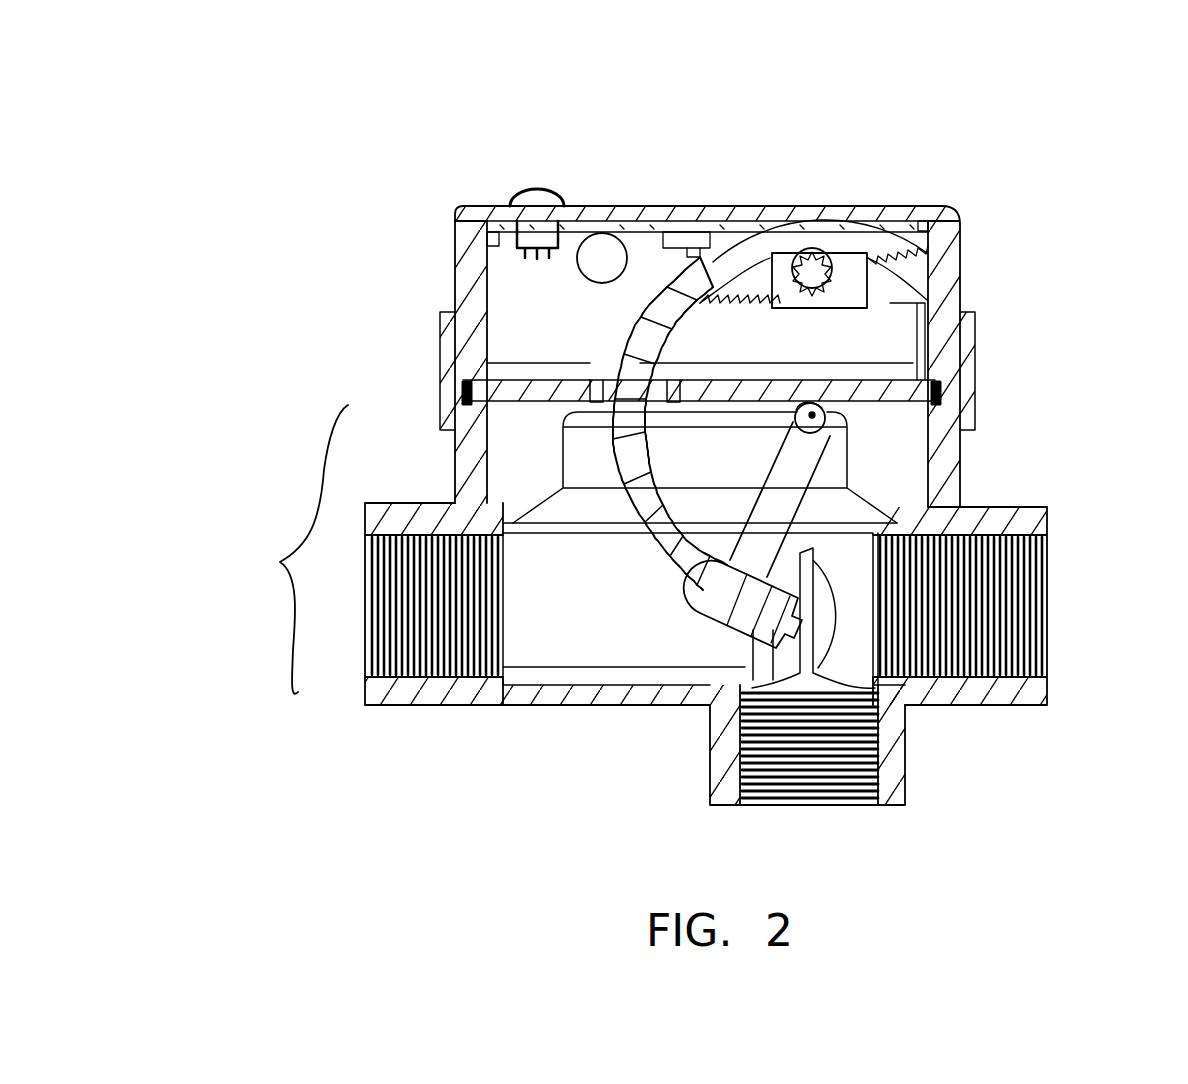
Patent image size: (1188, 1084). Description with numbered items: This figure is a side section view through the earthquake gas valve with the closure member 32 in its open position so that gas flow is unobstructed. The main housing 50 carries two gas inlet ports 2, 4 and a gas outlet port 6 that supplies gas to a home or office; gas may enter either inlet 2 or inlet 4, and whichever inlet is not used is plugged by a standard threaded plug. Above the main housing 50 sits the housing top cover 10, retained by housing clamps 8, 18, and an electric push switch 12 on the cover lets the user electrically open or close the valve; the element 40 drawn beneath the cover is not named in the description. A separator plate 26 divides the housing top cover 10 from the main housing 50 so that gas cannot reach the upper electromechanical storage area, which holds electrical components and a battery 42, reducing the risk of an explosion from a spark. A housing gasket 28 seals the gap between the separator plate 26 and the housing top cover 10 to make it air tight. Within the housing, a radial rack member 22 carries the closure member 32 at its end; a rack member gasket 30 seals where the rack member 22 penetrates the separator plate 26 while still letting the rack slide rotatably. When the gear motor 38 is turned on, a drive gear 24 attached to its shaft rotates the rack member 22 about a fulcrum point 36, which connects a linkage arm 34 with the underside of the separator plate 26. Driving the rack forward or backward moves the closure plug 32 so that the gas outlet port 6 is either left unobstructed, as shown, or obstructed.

The gas inlet port 2 is at (365, 640).
The gas inlet port 4 is at (855, 803).
The gas outlet port 6 is at (1045, 622).
The housing clamp 8 is at (975, 370).
The housing top cover 10 is at (703, 215).
The electric push switch 12 is at (548, 190).
The housing clamp 18 is at (440, 340).
The radial rack member 22 is at (845, 242).
The drive gear 24 is at (835, 280).
The separator plate 26 is at (873, 390).
The housing gasket 28 is at (980, 395).
The rack member gasket 30 is at (598, 395).
The closure member 32 is at (752, 655).
The linkage arm 34 is at (775, 498).
The fulcrum point 36 is at (758, 460).
The gear motor 38 is at (780, 273).
The cover plate 40 is at (643, 203).
The battery 42 is at (593, 255).
The main housing 50 is at (266, 549).